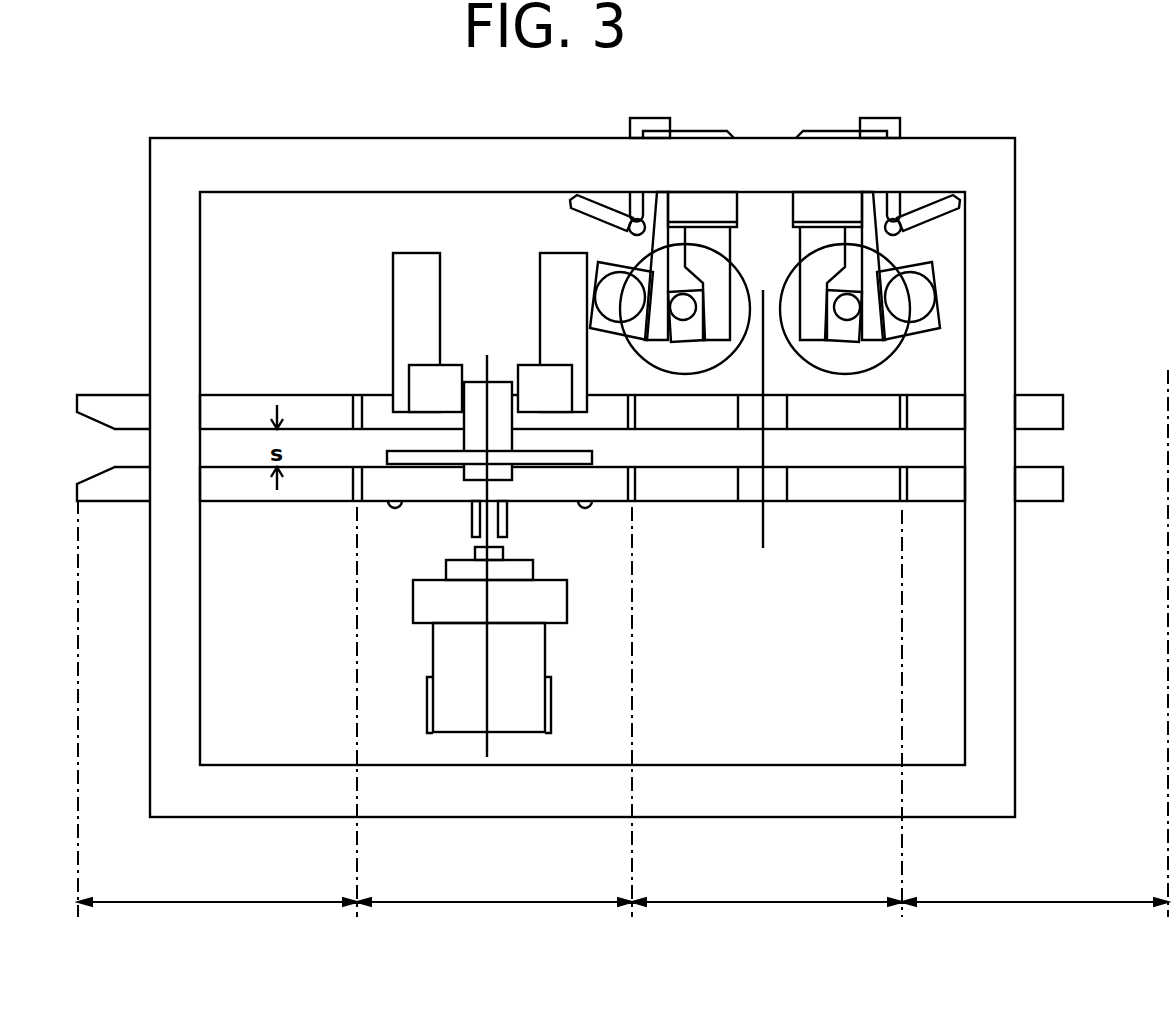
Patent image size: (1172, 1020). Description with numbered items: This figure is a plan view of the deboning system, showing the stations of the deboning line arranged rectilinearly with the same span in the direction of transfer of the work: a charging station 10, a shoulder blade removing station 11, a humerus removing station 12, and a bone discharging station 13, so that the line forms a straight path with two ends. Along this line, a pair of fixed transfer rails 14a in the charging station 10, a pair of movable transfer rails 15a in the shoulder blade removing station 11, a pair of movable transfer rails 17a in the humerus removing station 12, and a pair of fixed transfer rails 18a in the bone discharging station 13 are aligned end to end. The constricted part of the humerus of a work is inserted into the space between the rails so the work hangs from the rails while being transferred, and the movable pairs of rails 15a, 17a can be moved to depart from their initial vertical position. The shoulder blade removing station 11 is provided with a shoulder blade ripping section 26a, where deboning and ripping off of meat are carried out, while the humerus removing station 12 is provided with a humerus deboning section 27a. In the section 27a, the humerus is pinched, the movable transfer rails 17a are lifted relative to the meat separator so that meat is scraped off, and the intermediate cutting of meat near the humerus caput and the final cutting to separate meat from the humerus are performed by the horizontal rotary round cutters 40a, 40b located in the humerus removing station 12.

The charging station 10 is at (217, 864).
The shoulder blade removing station 11 is at (494, 864).
The humerus removing station 12 is at (767, 862).
The bone discharging station 13 is at (1035, 863).
The fixed transfer rails 14a is at (111, 395).
The movable transfer rails 15a is at (380, 395).
The movable transfer rails 17a is at (777, 493).
The fixed transfer rails 18a is at (1035, 495).
The shoulder blade ripping section 26a is at (569, 632).
The humerus deboning section 27a is at (905, 357).
The horizontal rotary round cutter 40a is at (760, 264).
The horizontal rotary round cutter 40b is at (824, 354).